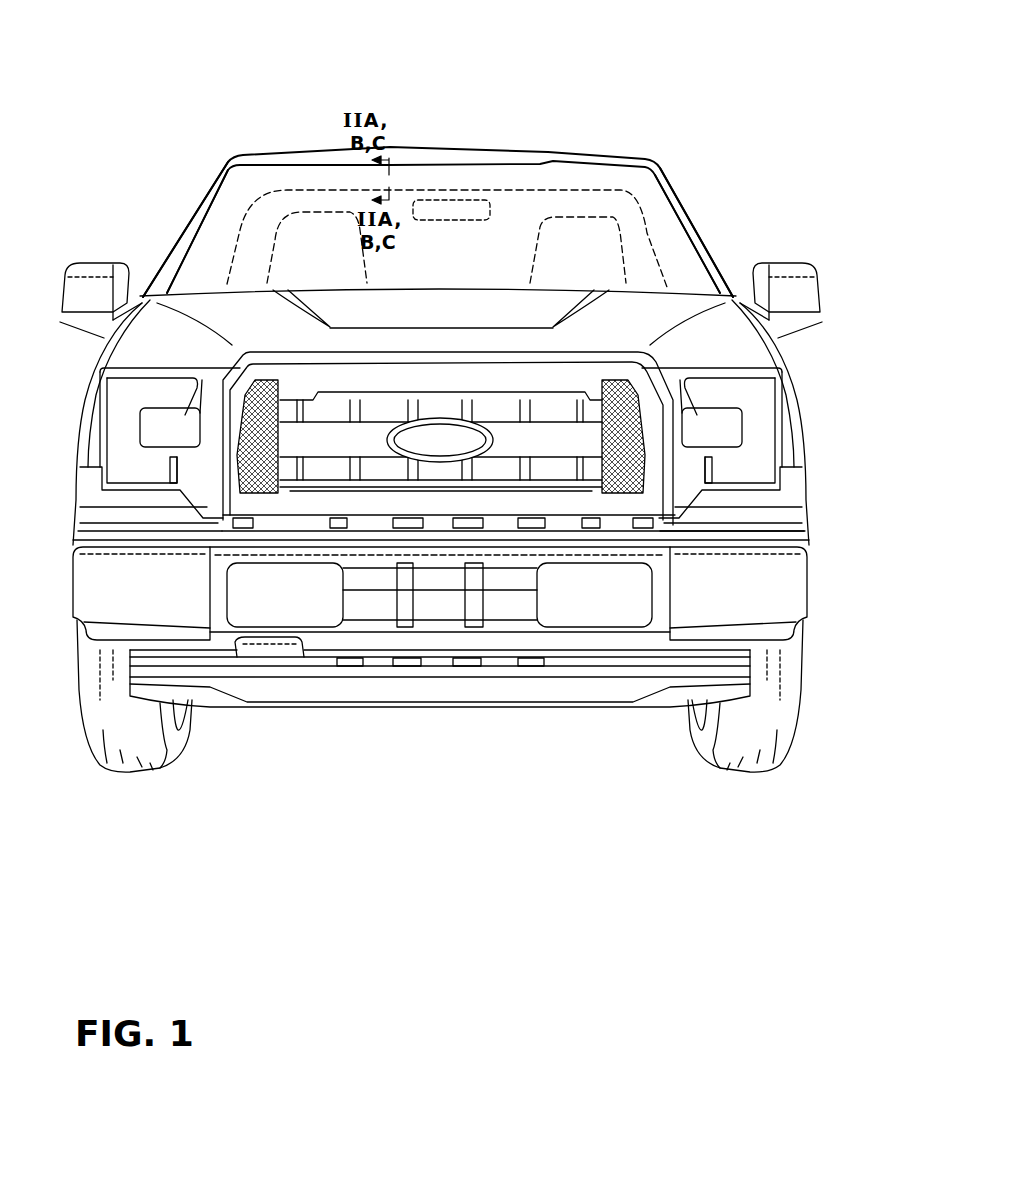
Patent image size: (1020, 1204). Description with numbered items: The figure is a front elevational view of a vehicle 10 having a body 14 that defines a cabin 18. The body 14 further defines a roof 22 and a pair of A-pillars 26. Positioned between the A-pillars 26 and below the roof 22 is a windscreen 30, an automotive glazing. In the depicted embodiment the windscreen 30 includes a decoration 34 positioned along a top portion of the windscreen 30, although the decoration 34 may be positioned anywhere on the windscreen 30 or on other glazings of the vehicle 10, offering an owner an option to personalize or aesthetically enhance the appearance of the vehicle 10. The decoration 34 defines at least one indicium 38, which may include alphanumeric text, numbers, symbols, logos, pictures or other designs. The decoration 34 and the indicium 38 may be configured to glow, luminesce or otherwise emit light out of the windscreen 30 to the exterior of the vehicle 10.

The vehicle 10 is at (668, 78).
The body 14 is at (763, 358).
The cabin 18 is at (620, 213).
The roof 22 is at (578, 157).
The A-pillars 26 is at (213, 200).
The windscreen 30 is at (353, 212).
The decoration 34 is at (493, 168).
The indicium 38 is at (412, 170).